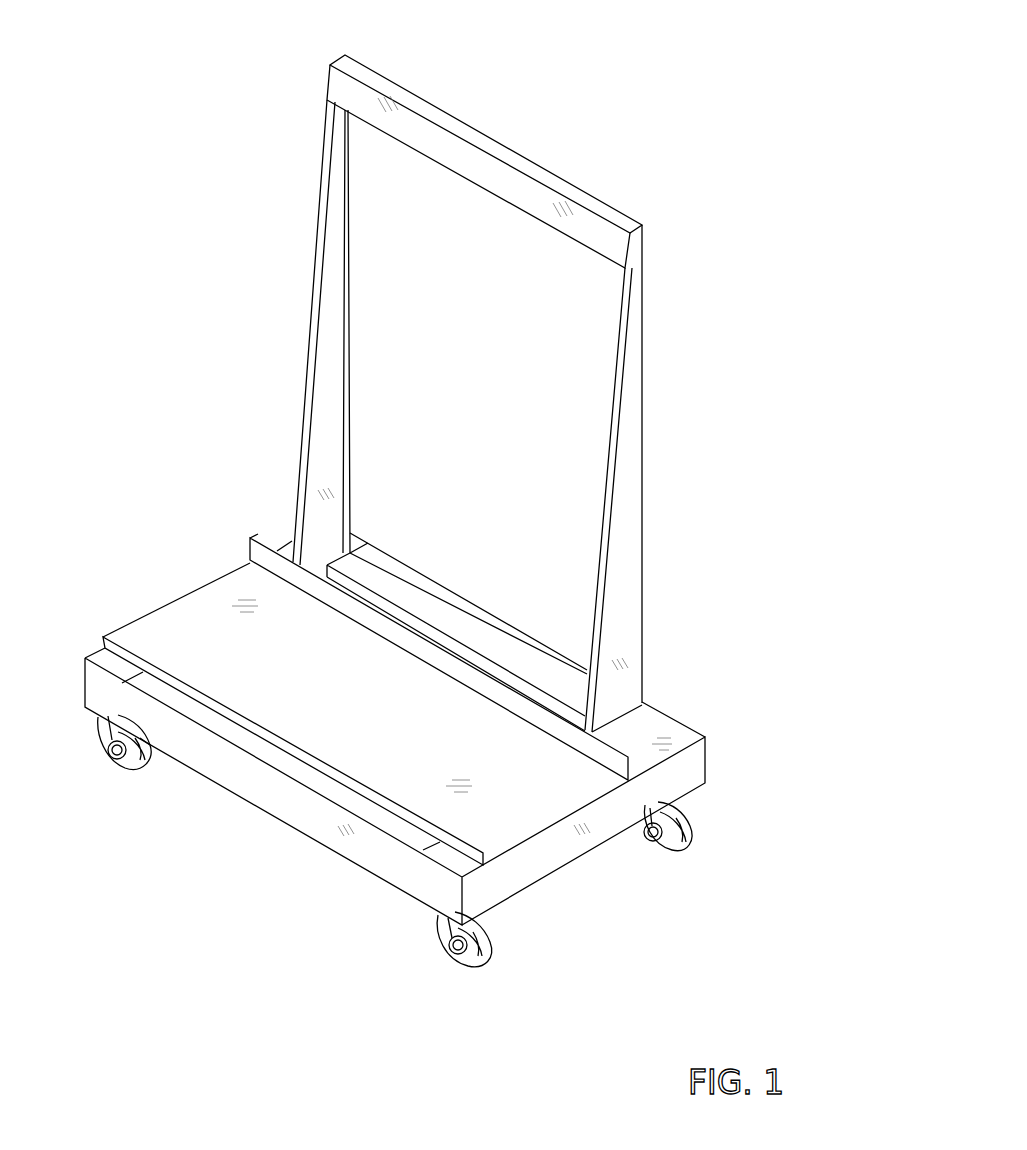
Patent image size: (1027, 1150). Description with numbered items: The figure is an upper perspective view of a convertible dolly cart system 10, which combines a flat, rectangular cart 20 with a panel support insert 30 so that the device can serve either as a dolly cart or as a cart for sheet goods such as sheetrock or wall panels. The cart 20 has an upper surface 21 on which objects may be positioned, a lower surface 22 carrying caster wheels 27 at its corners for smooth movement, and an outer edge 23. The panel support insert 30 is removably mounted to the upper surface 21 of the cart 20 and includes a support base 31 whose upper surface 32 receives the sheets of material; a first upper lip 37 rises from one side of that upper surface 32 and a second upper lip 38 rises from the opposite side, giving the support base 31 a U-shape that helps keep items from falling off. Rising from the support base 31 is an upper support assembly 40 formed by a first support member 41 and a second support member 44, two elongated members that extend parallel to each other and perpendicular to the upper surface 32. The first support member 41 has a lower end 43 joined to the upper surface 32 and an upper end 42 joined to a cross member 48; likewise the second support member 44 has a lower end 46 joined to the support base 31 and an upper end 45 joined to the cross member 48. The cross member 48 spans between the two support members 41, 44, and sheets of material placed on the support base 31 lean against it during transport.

The convertible dolly cart system 10 is at (140, 138).
The cart 20 is at (385, 755).
The upper surface 21 is at (676, 736).
The lower surface 22 is at (236, 792).
The outer edge 23 is at (420, 574).
The caster wheels 27 is at (121, 762).
The panel support insert 30 is at (308, 328).
The support base 31 is at (212, 648).
The upper surface 32 is at (520, 792).
The first upper lip 37 is at (104, 640).
The second upper lip 38 is at (263, 536).
The upper support assembly 40 is at (643, 337).
The first support member 41 is at (319, 223).
The upper end 42 is at (332, 80).
The lower end 43 is at (294, 526).
The second support member 44 is at (644, 486).
The upper end 45 is at (644, 239).
The lower end 46 is at (606, 721).
The cross member 48 is at (424, 98).